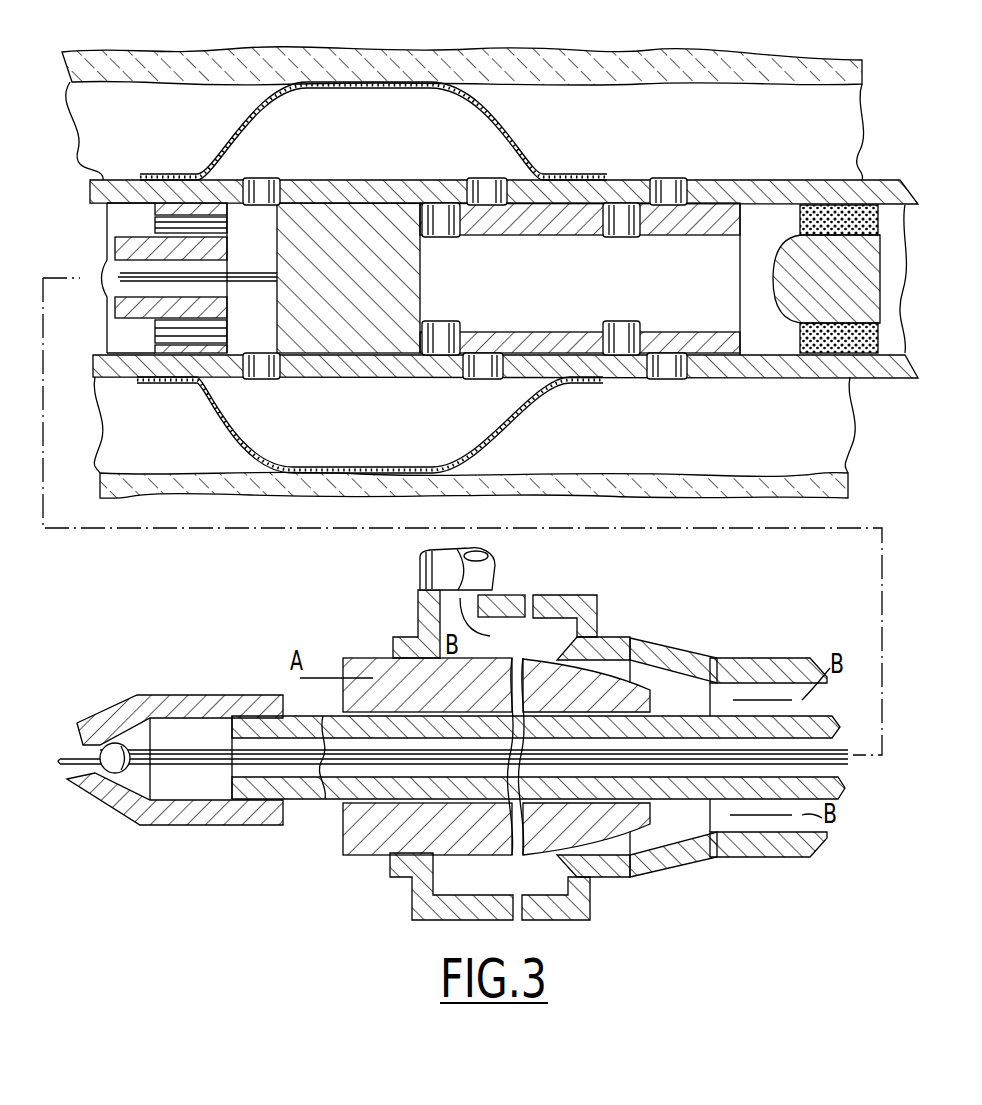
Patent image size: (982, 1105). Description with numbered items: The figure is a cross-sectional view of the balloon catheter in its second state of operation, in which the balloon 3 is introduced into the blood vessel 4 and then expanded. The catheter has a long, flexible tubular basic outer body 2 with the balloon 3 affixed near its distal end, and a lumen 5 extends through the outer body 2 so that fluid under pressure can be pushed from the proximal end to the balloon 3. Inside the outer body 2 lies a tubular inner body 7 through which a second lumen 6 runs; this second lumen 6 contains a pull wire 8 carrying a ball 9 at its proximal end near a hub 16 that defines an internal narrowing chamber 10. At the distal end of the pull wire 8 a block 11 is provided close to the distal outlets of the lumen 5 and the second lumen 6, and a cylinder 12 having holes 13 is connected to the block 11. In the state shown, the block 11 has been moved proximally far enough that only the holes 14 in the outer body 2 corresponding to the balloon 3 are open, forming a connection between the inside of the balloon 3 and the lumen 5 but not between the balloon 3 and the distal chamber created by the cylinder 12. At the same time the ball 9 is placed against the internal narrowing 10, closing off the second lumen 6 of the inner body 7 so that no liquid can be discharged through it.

The tubular basic outer body 2 is at (744, 190).
The balloon 3 is at (510, 122).
The blood vessel 4 is at (598, 62).
The lumen 5 is at (698, 690).
The second lumen 6 is at (112, 247).
The tubular inner body 7 is at (105, 224).
The pull wire 8 is at (118, 270).
The ball 9 is at (128, 768).
The internal narrowing chamber 10 is at (138, 728).
The block 11 is at (420, 303).
The cylinder 12 is at (545, 222).
The holes 13 is at (445, 325).
The holes 14 is at (262, 207).
The hub 16 is at (553, 596).